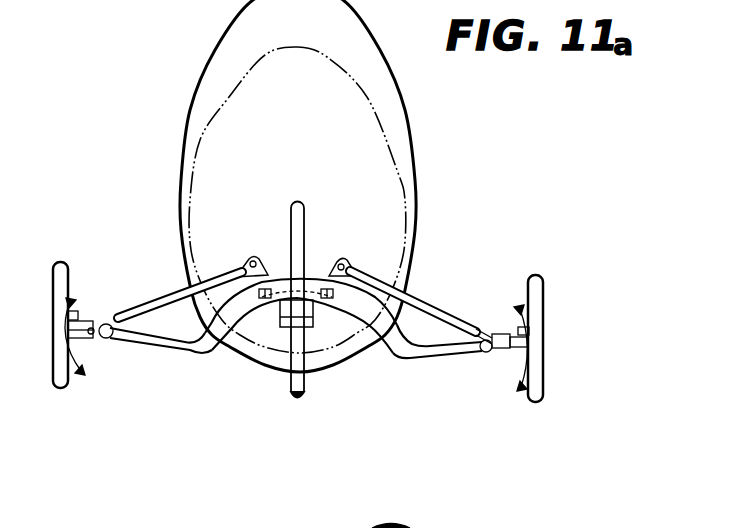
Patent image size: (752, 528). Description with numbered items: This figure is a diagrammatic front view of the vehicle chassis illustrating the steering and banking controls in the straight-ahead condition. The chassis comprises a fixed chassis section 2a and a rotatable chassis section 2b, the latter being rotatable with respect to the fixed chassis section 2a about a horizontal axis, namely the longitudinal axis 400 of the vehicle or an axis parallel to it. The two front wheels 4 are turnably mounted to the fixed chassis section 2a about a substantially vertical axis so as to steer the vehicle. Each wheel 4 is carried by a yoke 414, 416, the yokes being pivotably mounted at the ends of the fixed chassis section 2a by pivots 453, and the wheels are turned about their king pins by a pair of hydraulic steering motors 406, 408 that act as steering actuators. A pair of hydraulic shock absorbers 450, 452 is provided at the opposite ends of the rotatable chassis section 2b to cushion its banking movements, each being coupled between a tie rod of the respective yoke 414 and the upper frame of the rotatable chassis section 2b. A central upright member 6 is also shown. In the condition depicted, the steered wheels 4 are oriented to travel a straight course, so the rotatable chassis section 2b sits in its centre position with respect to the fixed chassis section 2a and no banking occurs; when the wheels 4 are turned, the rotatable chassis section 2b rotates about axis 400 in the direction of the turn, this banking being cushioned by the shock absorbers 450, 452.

The front wheels 4 is at (54, 377).
The steering rod 6 is at (304, 230).
The fixed chassis section 2a is at (188, 351).
The rotatable chassis section 2b is at (215, 303).
The longitudinal axis 400 is at (290, 385).
The hydraulic motor 406 is at (503, 350).
The hydraulic motor 408 is at (88, 339).
The yoke 414 is at (506, 328).
The yoke 416 is at (86, 318).
The shock absorber 450 is at (446, 312).
The shock absorber 452 is at (150, 305).
The pivots 453 is at (108, 340).